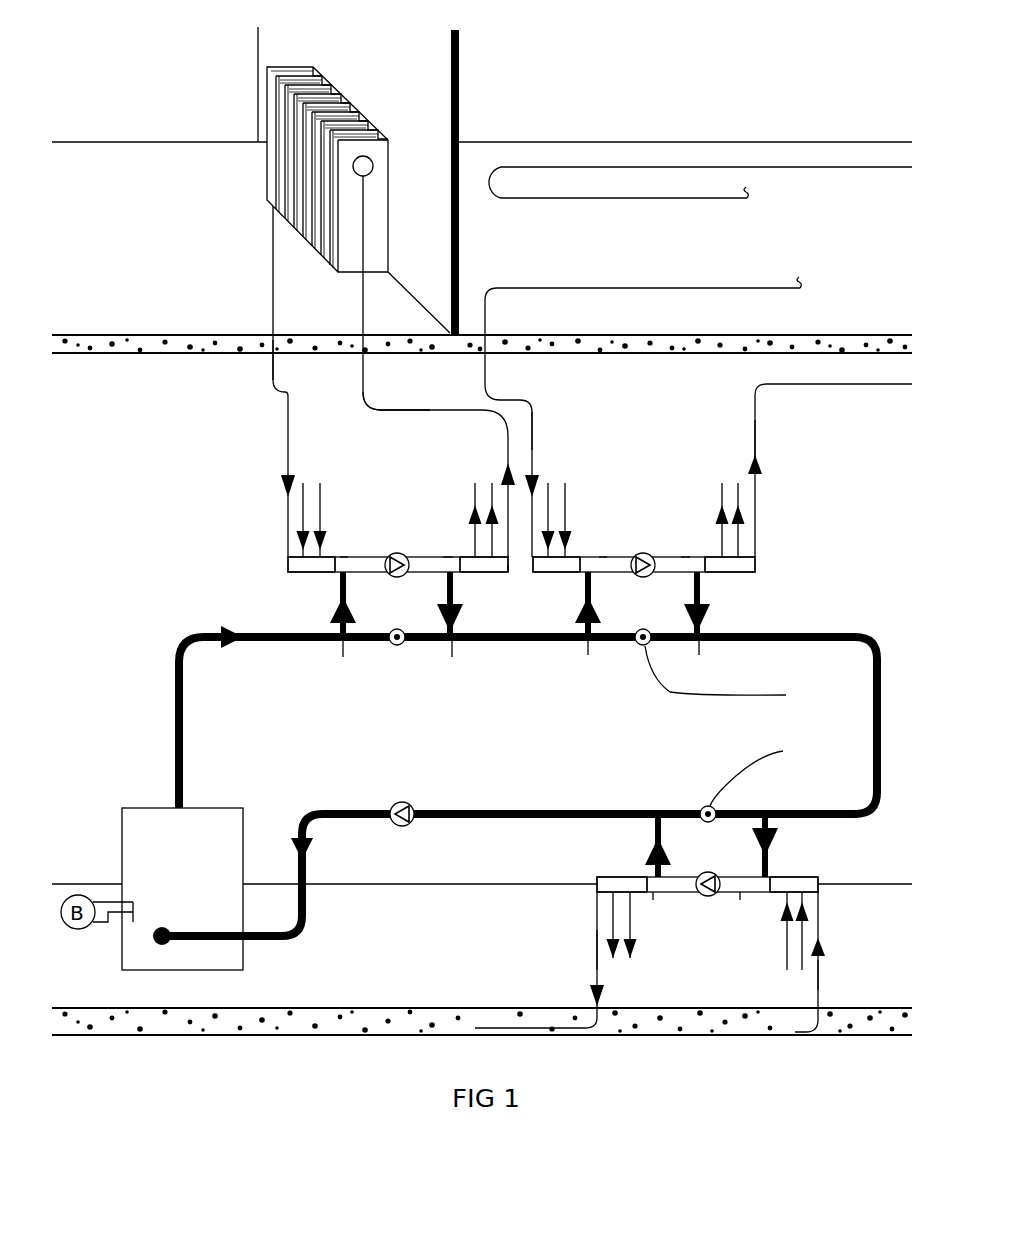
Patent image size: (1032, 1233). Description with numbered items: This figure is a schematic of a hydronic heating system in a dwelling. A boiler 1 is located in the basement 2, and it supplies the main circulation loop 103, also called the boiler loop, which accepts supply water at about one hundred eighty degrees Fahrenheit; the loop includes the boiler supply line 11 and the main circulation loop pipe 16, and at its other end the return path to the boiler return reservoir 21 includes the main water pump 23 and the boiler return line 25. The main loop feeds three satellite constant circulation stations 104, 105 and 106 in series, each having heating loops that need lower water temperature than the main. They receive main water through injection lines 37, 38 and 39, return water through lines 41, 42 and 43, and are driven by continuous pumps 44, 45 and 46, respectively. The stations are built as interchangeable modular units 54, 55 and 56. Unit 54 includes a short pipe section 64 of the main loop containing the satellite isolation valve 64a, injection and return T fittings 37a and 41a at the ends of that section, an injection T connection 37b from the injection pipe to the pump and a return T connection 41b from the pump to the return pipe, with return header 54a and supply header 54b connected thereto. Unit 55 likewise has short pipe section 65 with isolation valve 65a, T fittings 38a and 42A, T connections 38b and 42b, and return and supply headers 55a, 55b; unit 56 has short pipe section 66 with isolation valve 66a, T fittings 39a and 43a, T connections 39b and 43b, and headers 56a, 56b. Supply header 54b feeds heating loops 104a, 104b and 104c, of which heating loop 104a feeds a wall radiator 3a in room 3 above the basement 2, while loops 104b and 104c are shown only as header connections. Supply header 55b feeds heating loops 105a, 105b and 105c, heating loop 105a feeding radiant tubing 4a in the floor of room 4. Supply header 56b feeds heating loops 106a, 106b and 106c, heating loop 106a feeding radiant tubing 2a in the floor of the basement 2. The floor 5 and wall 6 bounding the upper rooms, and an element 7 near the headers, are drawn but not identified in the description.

The boiler 1 is at (150, 806).
The basement 2 is at (85, 423).
The radiant tubing in lower floor 2a is at (511, 1018).
The room 3 is at (112, 25).
The wall radiator 3a is at (265, 174).
The room 4 is at (640, 25).
The radiant tubing 4a is at (600, 167).
The floor 5 is at (645, 355).
The wall 6 is at (459, 98).
The partition 7 is at (522, 572).
The boiler supply line 11 is at (184, 672).
The main circulation loop pipe 16 is at (884, 736).
The boiler return reservoir 21 is at (167, 928).
The main water pump 23 is at (392, 824).
The boiler return line 25 is at (307, 900).
The satellite injection pipe 37 is at (338, 590).
The injection T fitting 37a is at (342, 646).
The injection T connection 37b is at (347, 557).
The satellite injection pipe 38 is at (585, 622).
The injection T fitting 38a is at (586, 651).
The injection T connection 38b is at (603, 556).
The satellite injection pipe 39 is at (772, 868).
The injection T fitting 39a is at (765, 814).
The injection T connection 39b is at (740, 893).
The satellite return pipe 41 is at (467, 604).
The return T fitting 41a is at (449, 643).
The return T connection 41b is at (447, 556).
The satellite return pipe 42 is at (703, 583).
The return T fitting 42A is at (698, 645).
The return T connection 42b is at (685, 557).
The satellite return pipe 43 is at (648, 826).
The return T fitting 43a is at (658, 814).
The return T connection 43b is at (653, 893).
The satellite pump 44 is at (393, 553).
The satellite pump 45 is at (643, 553).
The satellite pump 46 is at (708, 893).
The modular unit 54 is at (385, 480).
The return header 54a is at (287, 561).
The supply header 54b is at (455, 580).
The modular unit 55 is at (665, 458).
The return header 55a is at (530, 573).
The supply header 55b is at (757, 565).
The modular unit 56 is at (698, 938).
The return header 56a is at (818, 892).
The supply header 56b is at (597, 890).
The short pipe section 64 is at (366, 636).
The satellite isolation valve 64a is at (532, 721).
The short pipe section 65 is at (614, 636).
The satellite isolation valve 65a is at (762, 724).
The short pipe section 66 is at (741, 822).
The satellite isolation valve 66a is at (754, 750).
The main circulation loop 103 is at (140, 636).
The satellite station 104 is at (232, 421).
The heating loop 104a is at (287, 538).
The heating loop 104b is at (303, 492).
The heating loop 104c is at (320, 512).
The satellite station 105 is at (814, 485).
The heating loop 105a is at (566, 410).
The heating loop 105b is at (548, 500).
The heating loop 105c is at (566, 510).
The satellite station 106 is at (500, 930).
The heating loop 106a is at (597, 945).
The heating loop 106b is at (806, 955).
The heating loop 106c is at (786, 953).